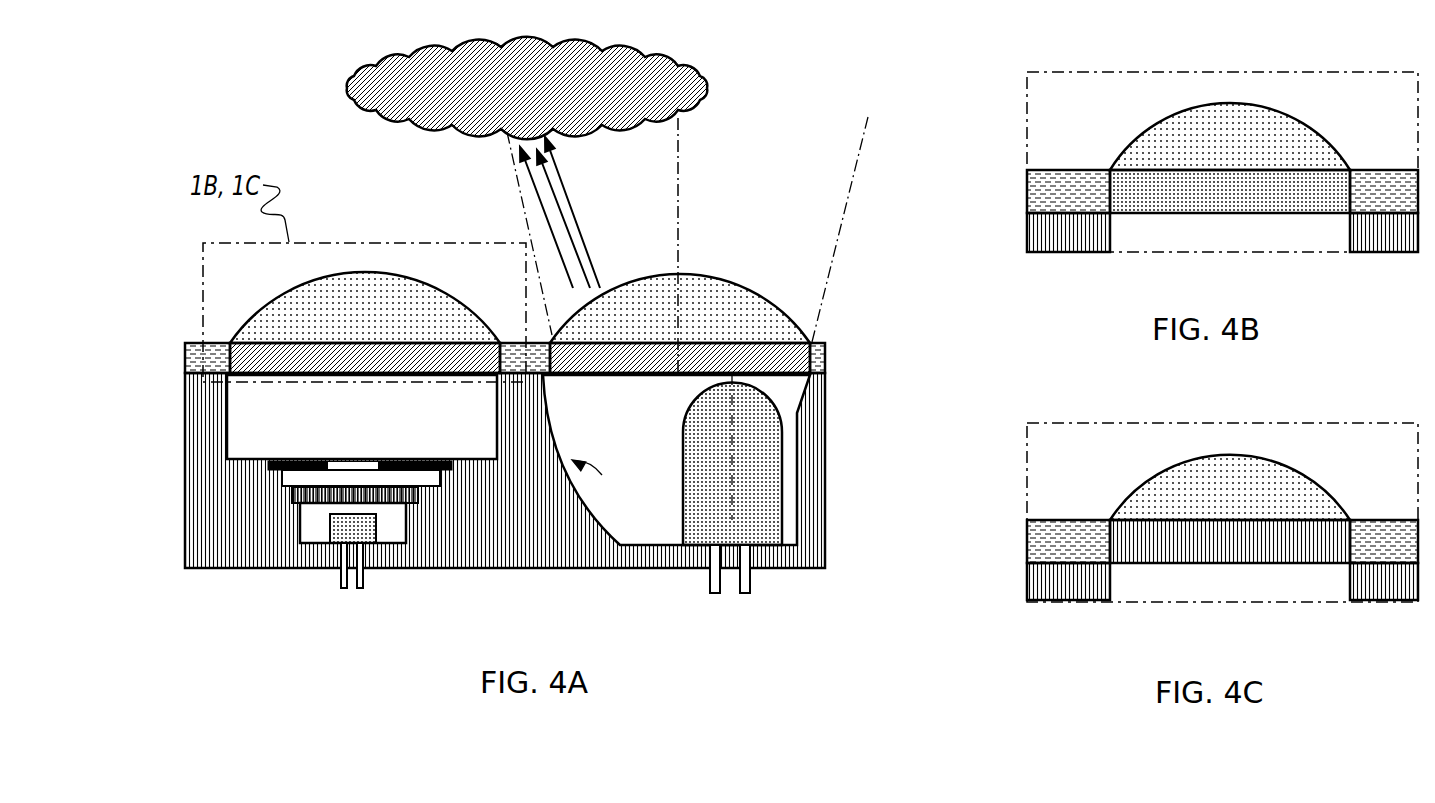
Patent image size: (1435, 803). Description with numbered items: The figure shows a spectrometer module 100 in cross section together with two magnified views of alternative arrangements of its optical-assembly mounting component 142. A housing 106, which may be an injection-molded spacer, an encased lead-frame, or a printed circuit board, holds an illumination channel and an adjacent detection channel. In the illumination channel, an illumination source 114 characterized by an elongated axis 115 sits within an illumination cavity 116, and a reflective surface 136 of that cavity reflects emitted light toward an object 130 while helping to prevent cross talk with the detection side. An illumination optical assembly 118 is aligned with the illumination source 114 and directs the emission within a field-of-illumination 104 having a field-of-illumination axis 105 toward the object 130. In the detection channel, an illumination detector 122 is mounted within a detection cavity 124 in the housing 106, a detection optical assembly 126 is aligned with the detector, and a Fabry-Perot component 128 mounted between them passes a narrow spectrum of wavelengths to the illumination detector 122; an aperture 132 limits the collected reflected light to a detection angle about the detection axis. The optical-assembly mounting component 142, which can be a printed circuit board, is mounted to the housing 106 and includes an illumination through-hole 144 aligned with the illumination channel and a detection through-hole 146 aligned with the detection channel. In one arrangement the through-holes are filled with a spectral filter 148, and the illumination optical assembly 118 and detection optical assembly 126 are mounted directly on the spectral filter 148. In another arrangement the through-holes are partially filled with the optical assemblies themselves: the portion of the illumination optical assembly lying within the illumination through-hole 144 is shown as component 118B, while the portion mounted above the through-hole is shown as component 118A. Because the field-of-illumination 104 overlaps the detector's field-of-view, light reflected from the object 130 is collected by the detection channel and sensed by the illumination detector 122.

In FIG. 4A, the spectrometer module 100 is at (493, 440).
In FIG. 4A, the field-of-illumination 104 is at (860, 147).
In FIG. 4A, the field-of-illumination axis 105 is at (682, 192).
In FIG. 4A, the housing 106 is at (547, 546).
In FIG. 4B, the housing 106 is at (1087, 232).
In FIG. 4C, the housing 106 is at (1073, 583).
In FIG. 4A, the illumination source 114 is at (762, 540).
In FIG. 4A, the elongated axis 115 is at (720, 510).
In FIG. 4A, the illumination cavity 116 is at (641, 434).
In FIG. 4A, the illumination optical assembly 118 is at (658, 331).
In FIG. 4C, the illumination optical assembly 118 is at (1245, 507).
In FIG. 4B, the illumination optical assembly portion above through-hole 118A is at (1250, 154).
In FIG. 4B, the illumination optical assembly portion within through-hole 118B is at (1225, 188).
In FIG. 4A, the illumination detector 122 is at (335, 520).
In FIG. 4A, the detection cavity 124 is at (373, 432).
In FIG. 4A, the detection optical assembly 126 is at (431, 327).
In FIG. 4A, the Fabry-Perot component 128 is at (290, 495).
In FIG. 4A, the object 130 is at (550, 104).
In FIG. 4A, the aperture 132 is at (282, 476).
In FIG. 4A, the reflective surface 136 is at (653, 538).
In FIG. 4A, the optical-assembly mounting component 142 is at (825, 356).
In FIG. 4B, the optical-assembly mounting component 142 is at (1048, 173).
In FIG. 4C, the optical-assembly mounting component 142 is at (1048, 533).
In FIG. 4A, the illumination through-hole 144 is at (752, 364).
In FIG. 4A, the detection through-hole 146 is at (272, 355).
In FIG. 4C, the spectral filter 148 is at (1220, 543).